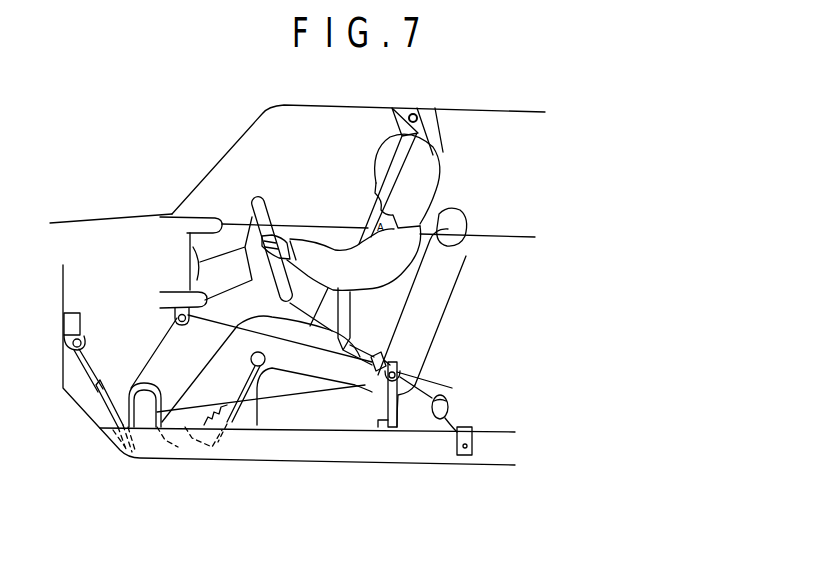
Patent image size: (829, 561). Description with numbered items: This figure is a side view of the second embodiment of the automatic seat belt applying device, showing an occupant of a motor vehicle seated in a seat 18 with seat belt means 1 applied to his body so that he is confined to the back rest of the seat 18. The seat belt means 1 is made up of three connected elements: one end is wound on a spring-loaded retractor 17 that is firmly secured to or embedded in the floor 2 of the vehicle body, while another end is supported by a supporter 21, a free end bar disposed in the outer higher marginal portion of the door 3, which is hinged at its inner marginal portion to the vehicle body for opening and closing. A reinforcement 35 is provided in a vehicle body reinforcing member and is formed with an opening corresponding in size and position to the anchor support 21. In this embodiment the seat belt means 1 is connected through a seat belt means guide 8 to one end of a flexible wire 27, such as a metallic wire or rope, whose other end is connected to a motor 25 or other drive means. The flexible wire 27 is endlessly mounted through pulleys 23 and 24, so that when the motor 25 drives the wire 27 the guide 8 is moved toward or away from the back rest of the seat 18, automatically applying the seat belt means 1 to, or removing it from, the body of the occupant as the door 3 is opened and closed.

The seat belt means 1 is at (368, 207).
The floor 2 is at (417, 452).
The door 3 is at (313, 228).
The seat belt means guide 8 is at (379, 355).
The retractor 17 is at (449, 405).
The seat 18 is at (445, 292).
The supporter 21 is at (418, 108).
The pulley 23 is at (175, 318).
The pulley 24 is at (402, 376).
The motor 25 is at (130, 394).
The flexible wire 27 is at (156, 349).
The reinforcement 35 is at (408, 110).